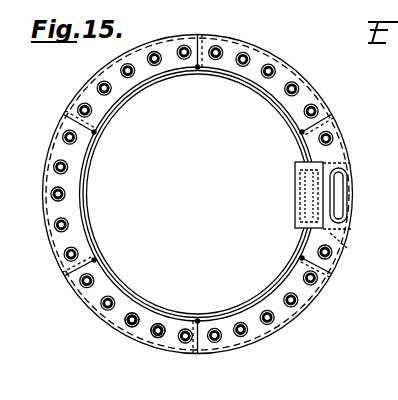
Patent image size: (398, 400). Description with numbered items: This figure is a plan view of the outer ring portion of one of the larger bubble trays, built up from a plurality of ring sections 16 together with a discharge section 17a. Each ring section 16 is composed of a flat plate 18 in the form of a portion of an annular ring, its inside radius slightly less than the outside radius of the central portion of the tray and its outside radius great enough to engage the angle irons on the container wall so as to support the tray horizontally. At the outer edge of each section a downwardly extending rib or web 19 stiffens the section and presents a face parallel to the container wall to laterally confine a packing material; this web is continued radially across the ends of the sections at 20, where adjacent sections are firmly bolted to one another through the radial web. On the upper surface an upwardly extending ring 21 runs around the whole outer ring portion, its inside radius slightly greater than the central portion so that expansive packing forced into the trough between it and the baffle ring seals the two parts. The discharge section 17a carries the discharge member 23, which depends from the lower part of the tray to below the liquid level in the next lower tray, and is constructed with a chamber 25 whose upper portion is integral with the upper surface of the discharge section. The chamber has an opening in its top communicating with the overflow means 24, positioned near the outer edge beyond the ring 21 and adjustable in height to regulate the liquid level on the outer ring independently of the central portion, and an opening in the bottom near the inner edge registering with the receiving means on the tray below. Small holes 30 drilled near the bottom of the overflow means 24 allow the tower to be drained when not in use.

The ring section 16 is at (137, 86).
The discharge section of the outer ring portion 17a is at (337, 151).
The flat plate 18 is at (168, 350).
The downwardly extending rib or web 19 is at (134, 340).
The radial web 20 is at (216, 34).
The upwardly extending ring 21 is at (85, 229).
The discharge member 23 is at (295, 197).
The overflow means 24 is at (348, 171).
The chamber 25 is at (347, 248).
The small holes 30 is at (345, 198).